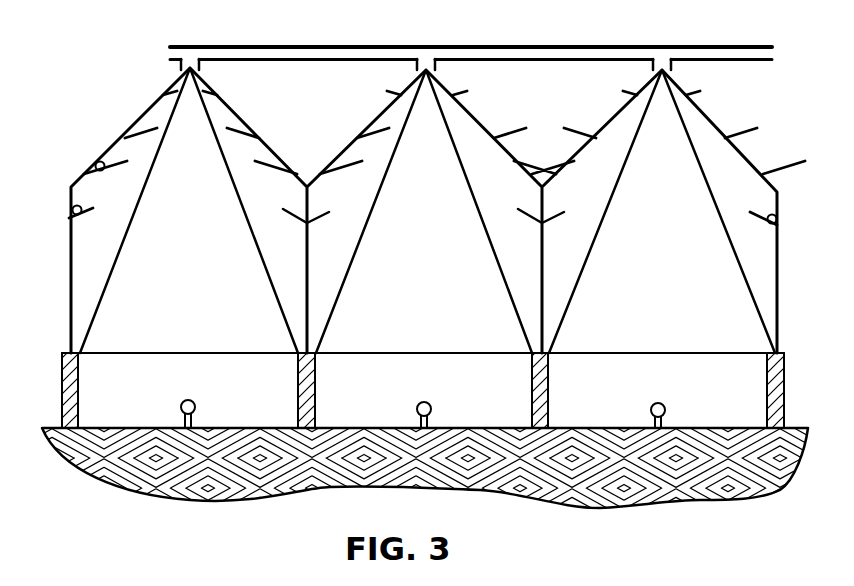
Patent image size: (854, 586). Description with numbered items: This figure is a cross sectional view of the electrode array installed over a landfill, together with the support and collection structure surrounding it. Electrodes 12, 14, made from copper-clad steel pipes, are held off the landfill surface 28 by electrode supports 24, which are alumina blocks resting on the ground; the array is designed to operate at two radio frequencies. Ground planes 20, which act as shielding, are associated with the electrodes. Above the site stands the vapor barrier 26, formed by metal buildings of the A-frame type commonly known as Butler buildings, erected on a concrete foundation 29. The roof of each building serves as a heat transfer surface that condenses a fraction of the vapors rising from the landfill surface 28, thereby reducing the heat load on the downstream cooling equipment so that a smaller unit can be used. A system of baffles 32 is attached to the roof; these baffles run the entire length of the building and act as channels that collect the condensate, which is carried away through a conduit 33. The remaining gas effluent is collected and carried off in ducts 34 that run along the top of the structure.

The electrode 12 is at (428, 401).
The electrode 14 is at (192, 399).
The ground plane 20 is at (172, 115).
The electrode support 24 is at (193, 418).
The vapor barrier 26 is at (126, 132).
The landfill surface 28 is at (117, 428).
The concrete foundation 29 is at (79, 394).
The baffle 32 is at (148, 132).
The conduit 33 is at (76, 207).
The duct 34 is at (518, 57).